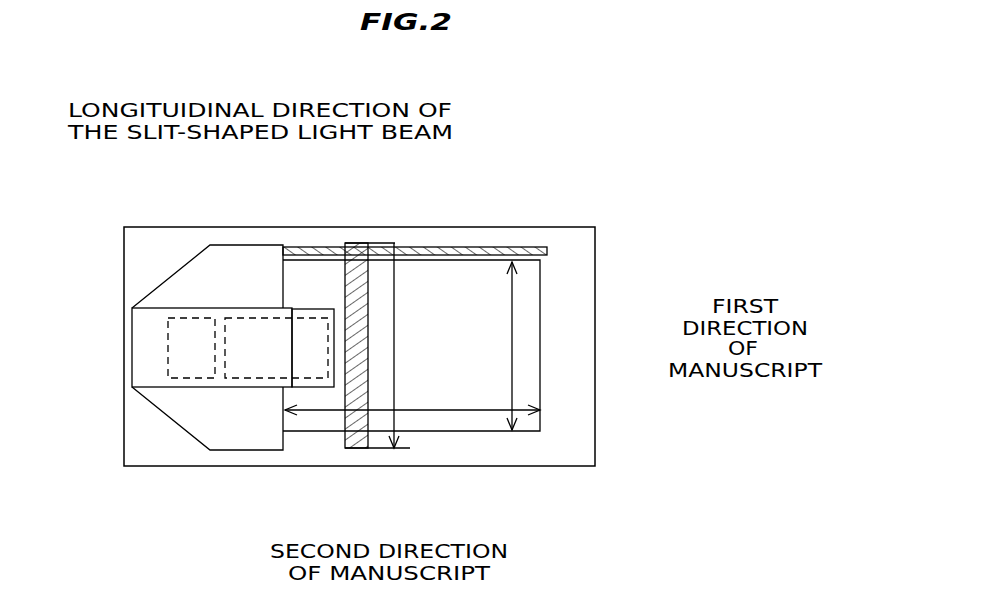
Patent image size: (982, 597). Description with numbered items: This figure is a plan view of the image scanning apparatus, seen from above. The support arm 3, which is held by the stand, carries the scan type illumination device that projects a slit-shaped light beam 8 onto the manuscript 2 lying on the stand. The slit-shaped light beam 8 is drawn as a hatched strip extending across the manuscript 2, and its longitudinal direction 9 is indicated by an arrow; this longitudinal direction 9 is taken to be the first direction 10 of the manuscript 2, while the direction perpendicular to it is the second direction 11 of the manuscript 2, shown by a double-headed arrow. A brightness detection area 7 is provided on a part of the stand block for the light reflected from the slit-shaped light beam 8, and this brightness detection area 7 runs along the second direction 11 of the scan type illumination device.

The manuscript 2 is at (486, 432).
The support arm 3 is at (143, 337).
The brightness detection area 7 is at (472, 250).
The slit-shaped light beam 8 is at (345, 262).
The longitudinal direction of the slit-shaped light beam 9 is at (393, 283).
The first direction of manuscript 10 is at (512, 348).
The second direction of manuscript 11 is at (447, 410).